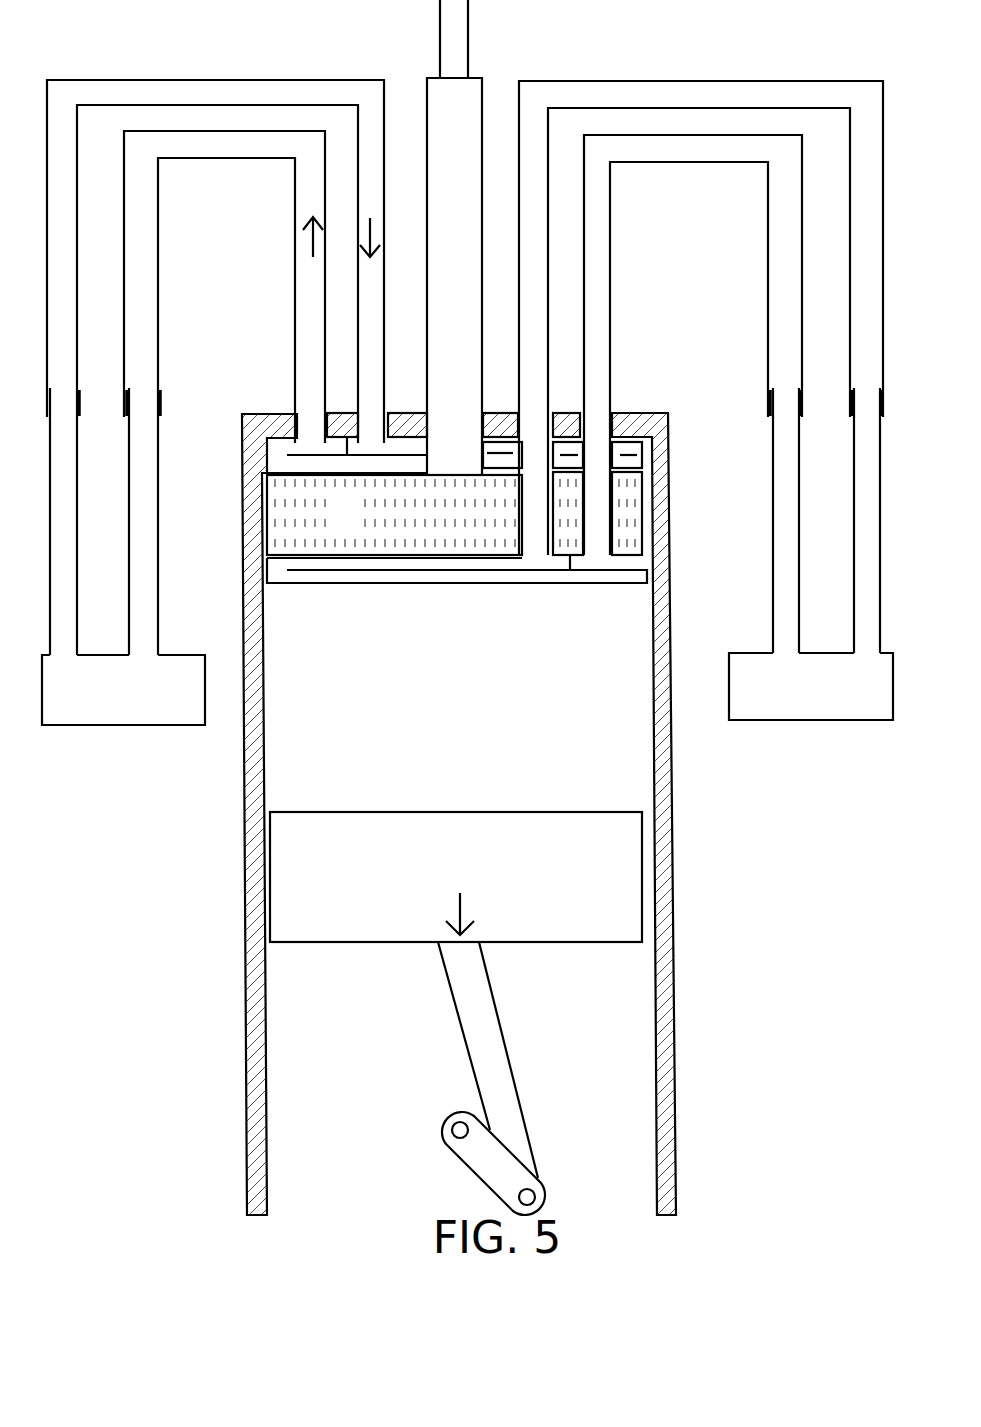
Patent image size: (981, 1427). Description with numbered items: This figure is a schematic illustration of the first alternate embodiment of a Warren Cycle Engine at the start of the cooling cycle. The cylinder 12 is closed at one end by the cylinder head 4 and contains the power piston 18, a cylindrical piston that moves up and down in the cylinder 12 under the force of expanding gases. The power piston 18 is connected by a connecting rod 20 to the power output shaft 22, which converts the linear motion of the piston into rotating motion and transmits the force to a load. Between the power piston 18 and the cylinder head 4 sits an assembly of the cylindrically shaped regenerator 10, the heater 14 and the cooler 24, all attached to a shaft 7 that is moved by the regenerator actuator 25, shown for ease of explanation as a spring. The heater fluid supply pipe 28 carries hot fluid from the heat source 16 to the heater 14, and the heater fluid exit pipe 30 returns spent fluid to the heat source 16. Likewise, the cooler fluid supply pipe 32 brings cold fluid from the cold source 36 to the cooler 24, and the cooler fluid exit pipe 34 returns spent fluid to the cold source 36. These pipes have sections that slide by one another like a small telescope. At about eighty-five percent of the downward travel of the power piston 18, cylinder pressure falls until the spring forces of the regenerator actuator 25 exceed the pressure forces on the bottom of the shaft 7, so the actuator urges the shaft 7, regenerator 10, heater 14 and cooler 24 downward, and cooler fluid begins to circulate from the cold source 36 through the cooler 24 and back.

The cylinder head 4 is at (423, 428).
The shaft 7 is at (475, 177).
The regenerator 10 is at (630, 503).
The cylinder 12 is at (333, 517).
The heater 14 is at (637, 568).
The heat source 16 is at (808, 690).
The power piston 18 is at (476, 866).
The connecting rod 20 is at (480, 1033).
The power output shaft 22 is at (478, 1163).
The cooler 24 is at (278, 465).
The regenerator actuator 25 is at (455, 60).
The heater fluid supply pipe 28 is at (862, 490).
The heater fluid exit pipe 30 is at (782, 548).
The cooler fluid supply pipe 32 is at (163, 93).
The cooler fluid exit pipe 34 is at (145, 503).
The cold source 36 is at (128, 700).